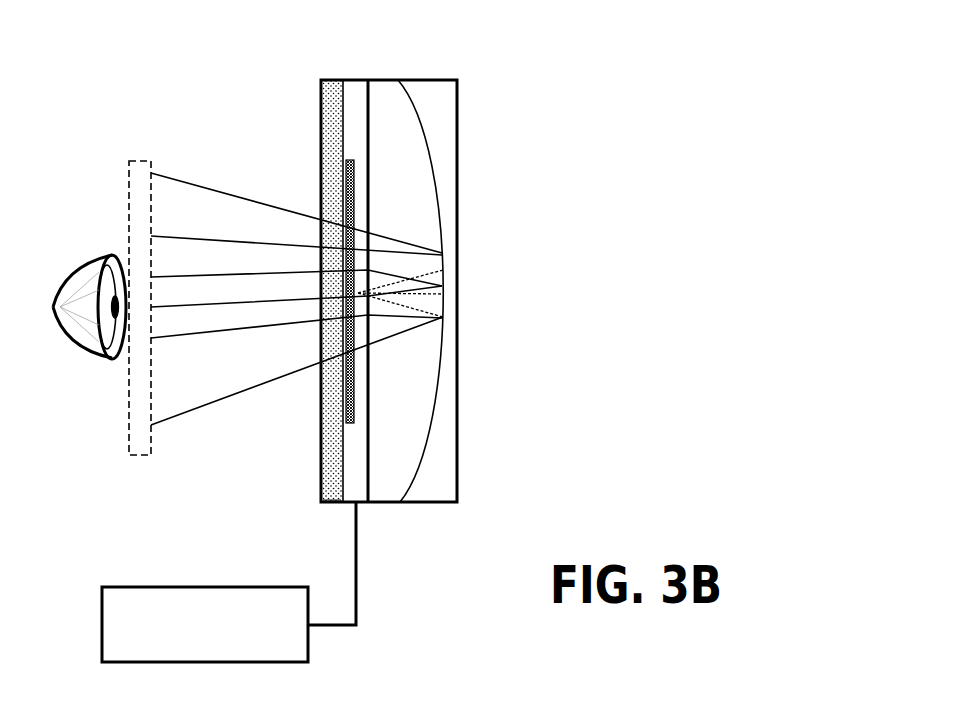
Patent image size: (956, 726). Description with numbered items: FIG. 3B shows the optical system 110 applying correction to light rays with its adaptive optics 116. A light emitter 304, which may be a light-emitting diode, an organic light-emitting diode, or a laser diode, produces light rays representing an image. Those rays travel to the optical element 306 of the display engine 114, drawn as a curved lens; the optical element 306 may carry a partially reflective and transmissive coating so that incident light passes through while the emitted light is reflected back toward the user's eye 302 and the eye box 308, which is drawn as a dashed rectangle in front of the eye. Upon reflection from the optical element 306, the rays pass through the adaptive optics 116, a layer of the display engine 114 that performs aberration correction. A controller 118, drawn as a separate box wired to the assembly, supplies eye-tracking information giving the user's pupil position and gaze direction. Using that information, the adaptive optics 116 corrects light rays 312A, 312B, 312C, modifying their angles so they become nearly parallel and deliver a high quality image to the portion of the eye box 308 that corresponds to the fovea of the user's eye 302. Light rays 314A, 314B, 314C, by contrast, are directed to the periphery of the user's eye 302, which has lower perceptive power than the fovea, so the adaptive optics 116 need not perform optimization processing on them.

The optical system 110 is at (576, 30).
The display engine 114 is at (386, 80).
The adaptive optics 116 is at (321, 478).
The controller 118 is at (226, 636).
The user's eye 302 is at (97, 259).
The light emitter 304 is at (354, 160).
The optical element 306 is at (432, 155).
The eye box 308 is at (141, 160).
The light ray 312A is at (250, 274).
The light ray 312B is at (257, 302).
The light ray 312C is at (254, 328).
The light ray 314A is at (270, 205).
The light ray 314B is at (285, 245).
The light ray 314C is at (243, 390).